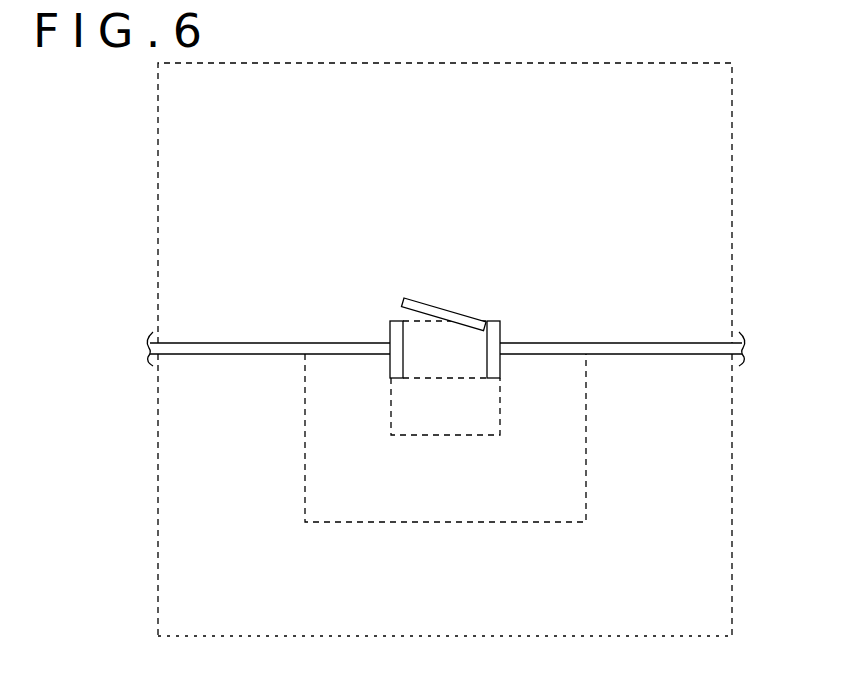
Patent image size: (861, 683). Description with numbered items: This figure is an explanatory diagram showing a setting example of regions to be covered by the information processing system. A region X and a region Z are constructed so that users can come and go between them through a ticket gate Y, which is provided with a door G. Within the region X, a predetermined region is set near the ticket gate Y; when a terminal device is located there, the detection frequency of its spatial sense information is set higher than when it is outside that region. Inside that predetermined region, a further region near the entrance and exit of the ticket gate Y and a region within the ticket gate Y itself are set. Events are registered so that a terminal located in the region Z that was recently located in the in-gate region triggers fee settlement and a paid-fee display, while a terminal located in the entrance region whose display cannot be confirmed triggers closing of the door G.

The door G is at (456, 302).
The ticket gate Y is at (508, 325).
The region Z is at (734, 203).
The region X is at (734, 555).